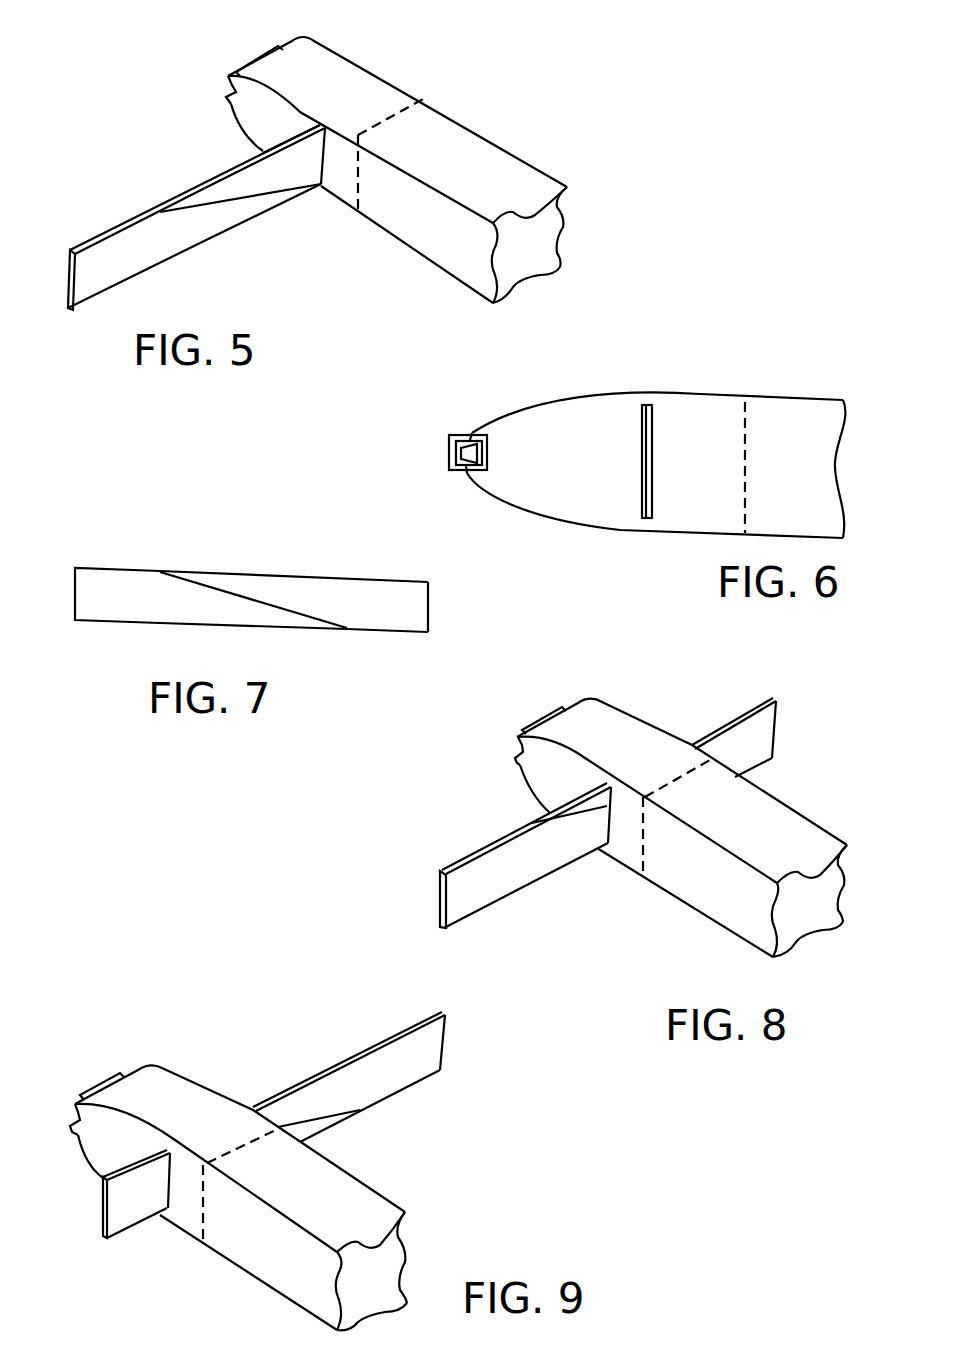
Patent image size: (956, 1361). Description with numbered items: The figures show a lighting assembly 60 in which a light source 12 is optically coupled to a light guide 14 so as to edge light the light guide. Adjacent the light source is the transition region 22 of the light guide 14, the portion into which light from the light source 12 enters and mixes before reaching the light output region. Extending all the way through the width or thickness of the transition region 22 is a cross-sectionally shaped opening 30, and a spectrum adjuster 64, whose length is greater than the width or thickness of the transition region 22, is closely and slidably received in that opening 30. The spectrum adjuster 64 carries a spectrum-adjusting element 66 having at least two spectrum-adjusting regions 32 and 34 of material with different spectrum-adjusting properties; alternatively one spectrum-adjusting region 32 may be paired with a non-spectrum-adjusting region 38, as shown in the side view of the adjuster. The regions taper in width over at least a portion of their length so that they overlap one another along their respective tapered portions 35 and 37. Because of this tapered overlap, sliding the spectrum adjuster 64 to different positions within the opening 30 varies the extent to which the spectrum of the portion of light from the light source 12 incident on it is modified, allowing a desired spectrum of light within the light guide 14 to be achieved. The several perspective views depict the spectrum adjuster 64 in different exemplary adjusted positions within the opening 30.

In FIG. 5, the light source 12 is at (257, 53).
In FIG. 6, the light source 12 is at (448, 448).
In FIG. 8, the light source 12 is at (538, 727).
In FIG. 9, the light source 12 is at (98, 1082).
In FIG. 5, the light guide 14 is at (442, 258).
In FIG. 6, the light guide 14 is at (793, 408).
In FIG. 8, the light guide 14 is at (705, 900).
In FIG. 9, the light guide 14 is at (360, 1200).
In FIG. 5, the transition region 22 is at (335, 193).
In FIG. 6, the transition region 22 is at (587, 512).
In FIG. 8, the transition region 22 is at (623, 847).
In FIG. 9, the transition region 22 is at (177, 1213).
In FIG. 5, the opening 30 is at (330, 155).
In FIG. 6, the opening 30 is at (653, 457).
In FIG. 8, the opening 30 is at (612, 812).
In FIG. 9, the opening 30 is at (170, 1181).
In FIG. 5, the spectrum-adjusting region 32 is at (147, 257).
In FIG. 7, the spectrum-adjusting region 32 is at (160, 613).
In FIG. 8, the spectrum-adjusting region 32 is at (520, 878).
In FIG. 9, the spectrum-adjusting region 32 is at (128, 1213).
In FIG. 5, the spectrum-adjusting region 34 is at (237, 183).
In FIG. 7, the spectrum-adjusting region 34 is at (388, 620).
In FIG. 8, the spectrum-adjusting region 34 is at (742, 735).
In FIG. 9, the spectrum-adjusting region 34 is at (388, 1077).
In FIG. 5, the tapered portion 35 is at (260, 208).
In FIG. 7, the tapered portion 35 is at (293, 622).
In FIG. 5, the tapered portion 37 is at (287, 160).
In FIG. 7, the tapered portion 37 is at (337, 590).
In FIG. 7, the non-spectrum-adjusting region 38 is at (402, 593).
In FIG. 5, the lighting assembly 60 is at (486, 99).
In FIG. 6, the lighting assembly 60 is at (698, 379).
In FIG. 8, the lighting assembly 60 is at (634, 699).
In FIG. 9, the lighting assembly 60 is at (165, 1043).
In FIG. 5, the spectrum adjuster 64 is at (157, 192).
In FIG. 6, the spectrum adjuster 64 is at (640, 433).
In FIG. 7, the spectrum adjuster 64 is at (265, 560).
In FIG. 8, the spectrum adjuster 64 is at (504, 832).
In FIG. 9, the spectrum adjuster 64 is at (311, 1064).
In FIG. 5, the spectrum-adjusting element 66 is at (207, 227).
In FIG. 7, the spectrum-adjusting element 66 is at (230, 613).
In FIG. 8, the spectrum-adjusting element 66 is at (465, 877).
In FIG. 9, the spectrum-adjusting element 66 is at (407, 1048).